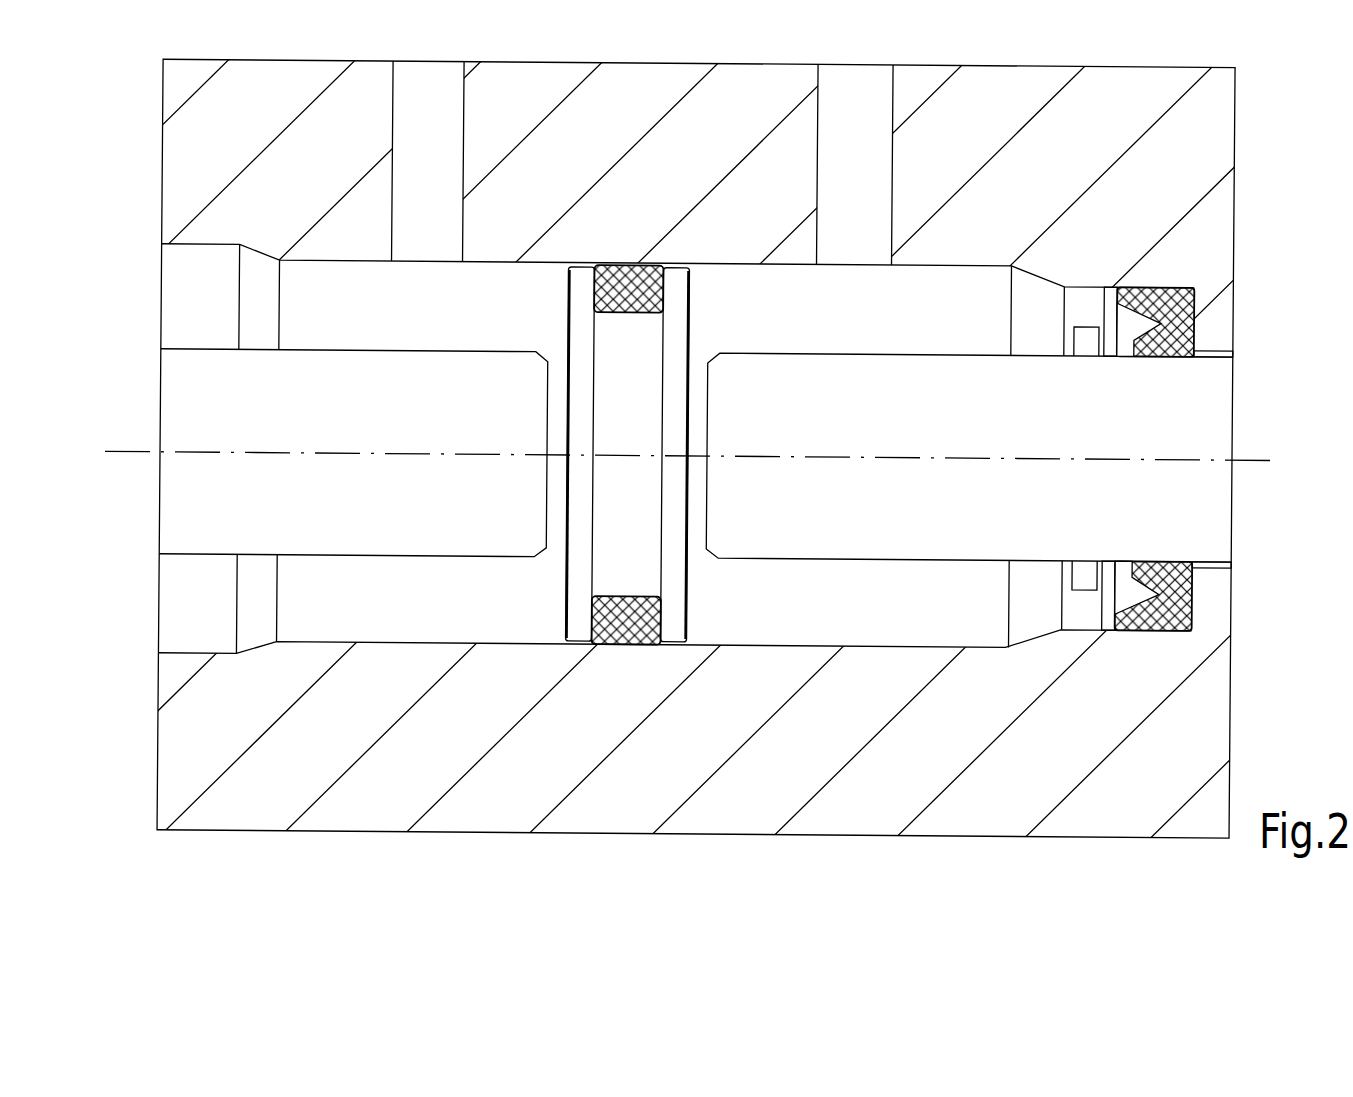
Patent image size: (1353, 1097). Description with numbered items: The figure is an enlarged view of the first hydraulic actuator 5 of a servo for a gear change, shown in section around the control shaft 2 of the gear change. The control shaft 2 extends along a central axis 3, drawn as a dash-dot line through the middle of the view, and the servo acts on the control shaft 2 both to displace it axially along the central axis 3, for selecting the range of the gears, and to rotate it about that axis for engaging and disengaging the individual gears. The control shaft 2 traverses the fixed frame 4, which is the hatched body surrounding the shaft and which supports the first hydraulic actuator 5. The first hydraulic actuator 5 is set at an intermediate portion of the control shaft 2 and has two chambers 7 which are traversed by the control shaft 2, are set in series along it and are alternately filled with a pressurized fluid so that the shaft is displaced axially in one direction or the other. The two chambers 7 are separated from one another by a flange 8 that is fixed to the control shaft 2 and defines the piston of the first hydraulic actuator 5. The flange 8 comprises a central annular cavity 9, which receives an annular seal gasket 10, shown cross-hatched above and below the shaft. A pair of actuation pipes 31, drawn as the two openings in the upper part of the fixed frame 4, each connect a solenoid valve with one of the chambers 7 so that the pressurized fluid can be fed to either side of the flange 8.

The control shaft 2 is at (167, 522).
The central axis 3 is at (1243, 455).
The fixed frame 4 is at (888, 793).
The first hydraulic actuator 5 is at (453, 842).
The chambers 7 is at (374, 298).
The flange 8 is at (640, 388).
The central annular cavity 9 is at (654, 256).
The annular seal gasket 10 is at (627, 265).
The actuation pipes 31 is at (437, 135).